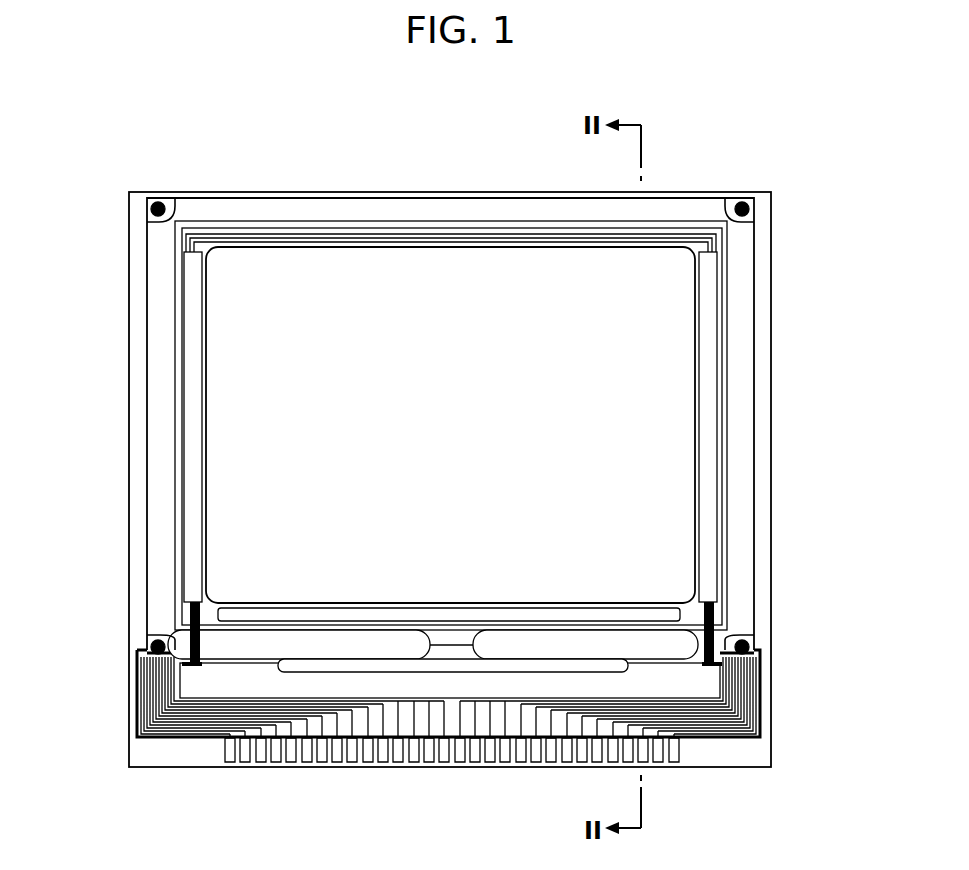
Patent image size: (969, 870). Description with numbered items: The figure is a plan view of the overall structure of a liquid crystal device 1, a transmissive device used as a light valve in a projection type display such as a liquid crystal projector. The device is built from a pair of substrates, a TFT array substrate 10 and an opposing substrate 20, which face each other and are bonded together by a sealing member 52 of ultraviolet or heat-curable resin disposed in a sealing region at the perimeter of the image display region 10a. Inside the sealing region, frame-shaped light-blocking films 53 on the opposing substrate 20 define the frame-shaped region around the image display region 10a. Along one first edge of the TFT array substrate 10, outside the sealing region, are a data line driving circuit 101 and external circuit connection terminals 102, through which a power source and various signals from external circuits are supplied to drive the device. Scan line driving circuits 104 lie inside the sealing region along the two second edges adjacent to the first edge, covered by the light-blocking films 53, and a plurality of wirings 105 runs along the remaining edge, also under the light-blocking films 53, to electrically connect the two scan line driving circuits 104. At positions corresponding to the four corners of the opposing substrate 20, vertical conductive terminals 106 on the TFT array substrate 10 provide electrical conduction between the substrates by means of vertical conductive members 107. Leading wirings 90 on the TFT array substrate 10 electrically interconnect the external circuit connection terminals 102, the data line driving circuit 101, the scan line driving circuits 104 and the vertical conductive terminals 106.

The liquid crystal device 1 is at (704, 158).
The TFT array substrate 10 is at (263, 194).
The image display region 10a is at (255, 380).
The opposing substrate 20 is at (478, 197).
The sealing member 52 is at (745, 355).
The frame-shaped light-blocking film 53 is at (700, 613).
The leading wiring 90 is at (153, 690).
The data line driving circuit 101 is at (205, 690).
The external circuit connection terminals 102 is at (413, 745).
The scan line driving circuit 104 is at (712, 428).
The wiring 105 is at (372, 240).
The vertical conductive terminal 106 is at (190, 198).
The vertical conductive member 107 is at (150, 210).